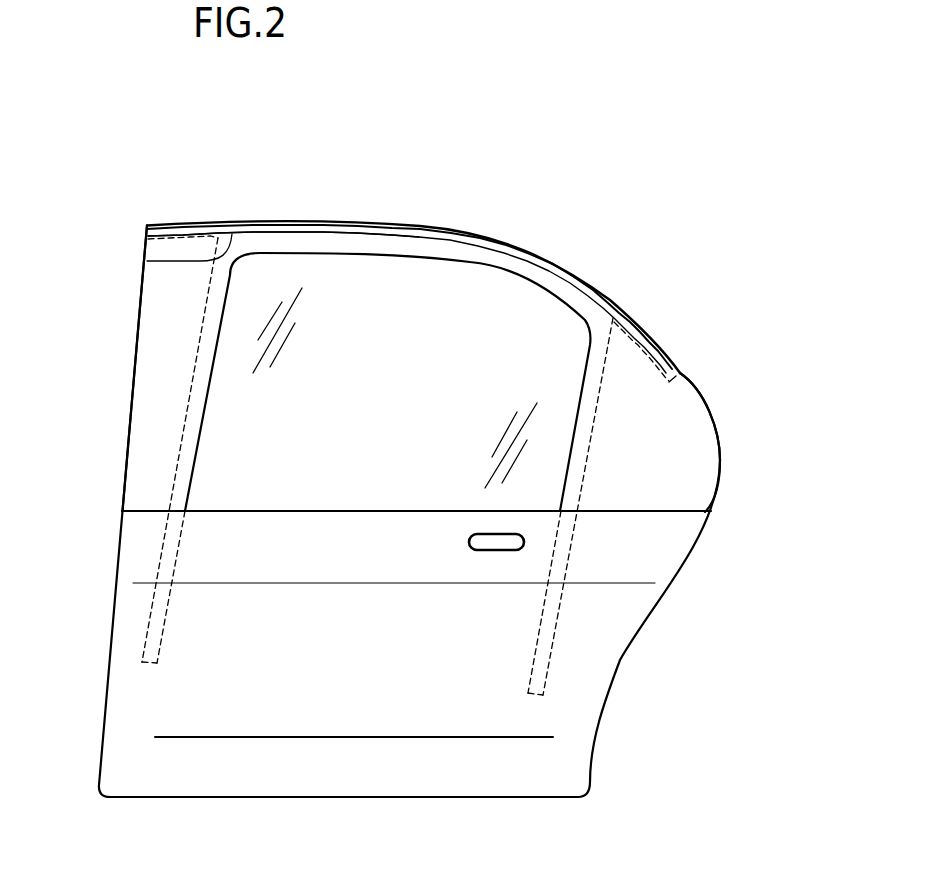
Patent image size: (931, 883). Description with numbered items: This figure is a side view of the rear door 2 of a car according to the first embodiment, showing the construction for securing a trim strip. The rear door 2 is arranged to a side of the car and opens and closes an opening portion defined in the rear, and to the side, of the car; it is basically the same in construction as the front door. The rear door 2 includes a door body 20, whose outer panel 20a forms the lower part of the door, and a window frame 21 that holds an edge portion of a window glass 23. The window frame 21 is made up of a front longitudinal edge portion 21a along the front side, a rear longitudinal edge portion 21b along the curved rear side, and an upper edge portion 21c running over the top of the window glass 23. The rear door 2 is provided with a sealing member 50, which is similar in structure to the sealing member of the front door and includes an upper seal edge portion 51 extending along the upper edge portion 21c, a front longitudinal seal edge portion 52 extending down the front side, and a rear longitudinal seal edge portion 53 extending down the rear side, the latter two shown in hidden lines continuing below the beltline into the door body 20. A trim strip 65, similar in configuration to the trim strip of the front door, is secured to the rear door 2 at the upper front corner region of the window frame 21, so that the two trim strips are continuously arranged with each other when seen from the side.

The rear door 2 is at (395, 185).
The door body 20 is at (605, 703).
The outer panel 20a is at (472, 780).
The window frame 21 is at (713, 418).
The front longitudinal edge portion 21a is at (152, 404).
The rear longitudinal edge portion 21b is at (693, 467).
The upper edge portion 21c is at (488, 260).
The window glass 23 is at (493, 312).
The sealing member 50 is at (233, 225).
The upper seal edge portion 51 is at (301, 243).
The front longitudinal seal edge portion 52 is at (148, 627).
The rear longitudinal seal edge portion 53 is at (555, 633).
The trim strip 65 is at (147, 261).